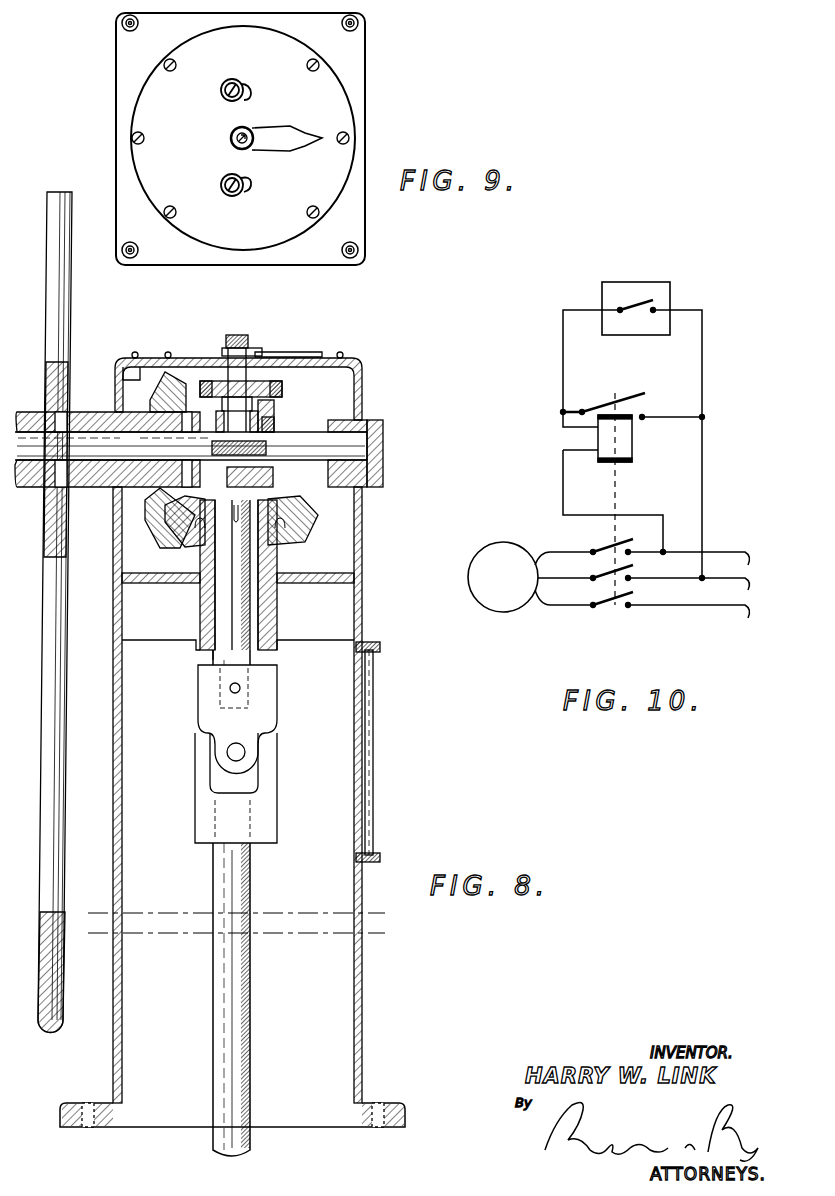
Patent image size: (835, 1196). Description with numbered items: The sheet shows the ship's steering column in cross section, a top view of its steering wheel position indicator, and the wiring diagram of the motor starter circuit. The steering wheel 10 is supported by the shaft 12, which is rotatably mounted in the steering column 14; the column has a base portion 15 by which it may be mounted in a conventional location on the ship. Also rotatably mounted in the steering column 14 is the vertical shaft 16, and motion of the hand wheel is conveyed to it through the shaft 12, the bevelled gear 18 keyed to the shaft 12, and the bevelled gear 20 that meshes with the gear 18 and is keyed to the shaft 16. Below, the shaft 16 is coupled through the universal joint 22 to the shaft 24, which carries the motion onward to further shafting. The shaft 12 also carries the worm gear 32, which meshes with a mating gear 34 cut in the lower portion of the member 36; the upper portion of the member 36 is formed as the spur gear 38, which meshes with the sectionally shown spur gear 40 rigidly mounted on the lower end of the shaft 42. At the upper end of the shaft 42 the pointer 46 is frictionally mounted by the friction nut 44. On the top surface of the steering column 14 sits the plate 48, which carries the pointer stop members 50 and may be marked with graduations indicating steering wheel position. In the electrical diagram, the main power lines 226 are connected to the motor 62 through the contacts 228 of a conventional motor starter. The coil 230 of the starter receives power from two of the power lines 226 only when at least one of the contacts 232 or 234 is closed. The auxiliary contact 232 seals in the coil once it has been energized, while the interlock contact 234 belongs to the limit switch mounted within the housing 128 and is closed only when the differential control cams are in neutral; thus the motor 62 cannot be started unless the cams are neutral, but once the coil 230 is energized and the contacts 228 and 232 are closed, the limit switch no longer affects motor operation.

In FIG. 8, the steering wheel 10 is at (49, 320).
In FIG. 8, the shaft 12 is at (310, 438).
In FIG. 8, the steering column 14 is at (115, 508).
In FIG. 8, the base portion 15 is at (368, 1105).
In FIG. 8, the vertical shaft 16 is at (258, 598).
In FIG. 8, the bevelled gear 18 is at (158, 520).
In FIG. 8, the bevelled gear 20 is at (197, 542).
In FIG. 8, the universal joint 22 is at (206, 698).
In FIG. 8, the shaft 24 is at (216, 882).
In FIG. 8, the worm gear 32 is at (266, 422).
In FIG. 8, the mating gear 34 is at (268, 458).
In FIG. 8, the member 36 is at (224, 412).
In FIG. 8, the spur gear 38 is at (283, 389).
In FIG. 8, the spur gear 40 is at (262, 406).
In FIG. 9, the shaft 42 is at (231, 135).
In FIG. 8, the shaft 42 is at (236, 333).
In FIG. 9, the friction nut 44 is at (236, 145).
In FIG. 8, the friction nut 44 is at (248, 342).
In FIG. 9, the pointer 46 is at (277, 135).
In FIG. 8, the pointer 46 is at (291, 352).
In FIG. 9, the plate 48 is at (287, 231).
In FIG. 8, the plate 48 is at (205, 357).
In FIG. 9, the pointer stop members 50 is at (249, 92).
In FIG. 10, the motor 62 is at (492, 550).
In FIG. 10, the housing 128 is at (609, 282).
In FIG. 10, the main power lines 226 is at (745, 600).
In FIG. 10, the contacts 228 is at (619, 621).
In FIG. 10, the coil 230 is at (632, 443).
In FIG. 10, the auxiliary contact 232 is at (612, 405).
In FIG. 10, the interlock contact 234 is at (648, 297).